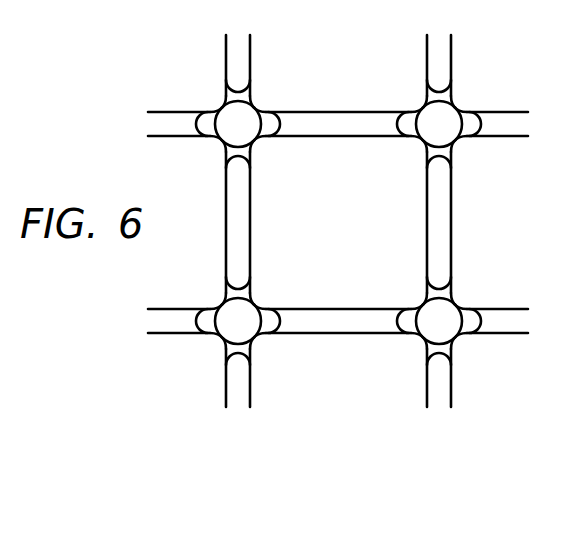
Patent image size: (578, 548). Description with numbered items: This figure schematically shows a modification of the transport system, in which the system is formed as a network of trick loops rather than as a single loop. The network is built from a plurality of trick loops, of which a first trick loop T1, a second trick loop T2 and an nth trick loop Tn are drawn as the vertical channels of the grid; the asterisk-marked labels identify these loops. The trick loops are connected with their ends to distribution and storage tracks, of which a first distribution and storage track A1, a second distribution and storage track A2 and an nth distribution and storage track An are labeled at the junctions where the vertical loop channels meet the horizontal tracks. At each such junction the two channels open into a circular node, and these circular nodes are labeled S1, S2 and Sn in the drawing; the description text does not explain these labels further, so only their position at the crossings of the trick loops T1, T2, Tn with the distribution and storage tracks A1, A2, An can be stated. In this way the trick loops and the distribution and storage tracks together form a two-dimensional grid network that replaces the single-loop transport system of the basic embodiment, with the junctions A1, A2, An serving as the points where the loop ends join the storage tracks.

The first storage cell S1 is at (234, 121).
The second storage cell S2 is at (443, 120).
The nth storage cell Sn is at (448, 327).
The distribution and storage track A1 is at (265, 137).
The distribution and storage track A2 is at (410, 135).
The distribution and storage track An is at (415, 309).
The trick loop T1 is at (292, 40).
The trick loop T2 is at (400, 40).
The trick loop Tn is at (428, 377).